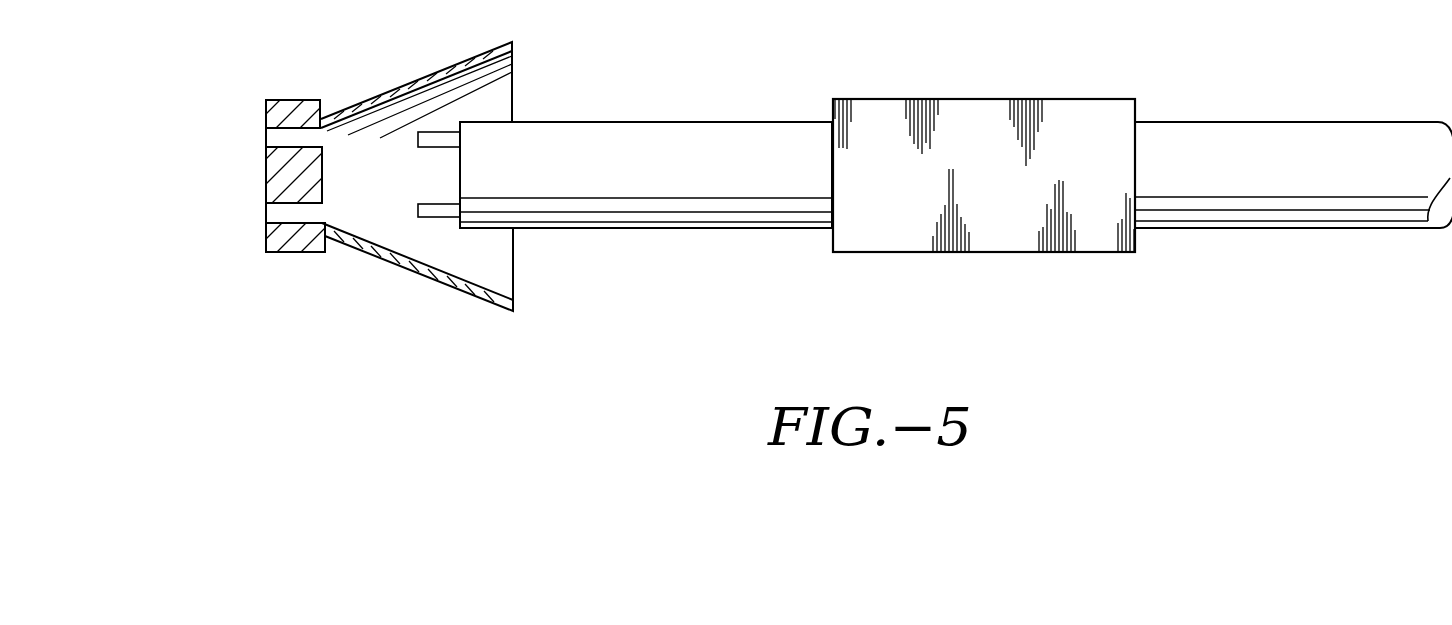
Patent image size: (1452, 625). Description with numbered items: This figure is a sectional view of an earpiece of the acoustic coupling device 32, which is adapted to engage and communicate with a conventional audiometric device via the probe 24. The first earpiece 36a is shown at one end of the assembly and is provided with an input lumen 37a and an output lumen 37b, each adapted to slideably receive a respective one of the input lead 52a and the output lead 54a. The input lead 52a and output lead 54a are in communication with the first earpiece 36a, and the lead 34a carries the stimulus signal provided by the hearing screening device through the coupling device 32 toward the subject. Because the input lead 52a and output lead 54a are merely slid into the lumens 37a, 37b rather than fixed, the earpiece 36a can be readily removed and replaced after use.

The first earpiece 36a is at (292, 100).
The input lumen 37a is at (275, 136).
The output lumen 37b is at (275, 216).
The input lead 52a is at (434, 132).
The output lead 54a is at (436, 218).
The lead 34a is at (680, 122).
The acoustic coupling device 32 is at (990, 99).
The probe 24 is at (1308, 122).